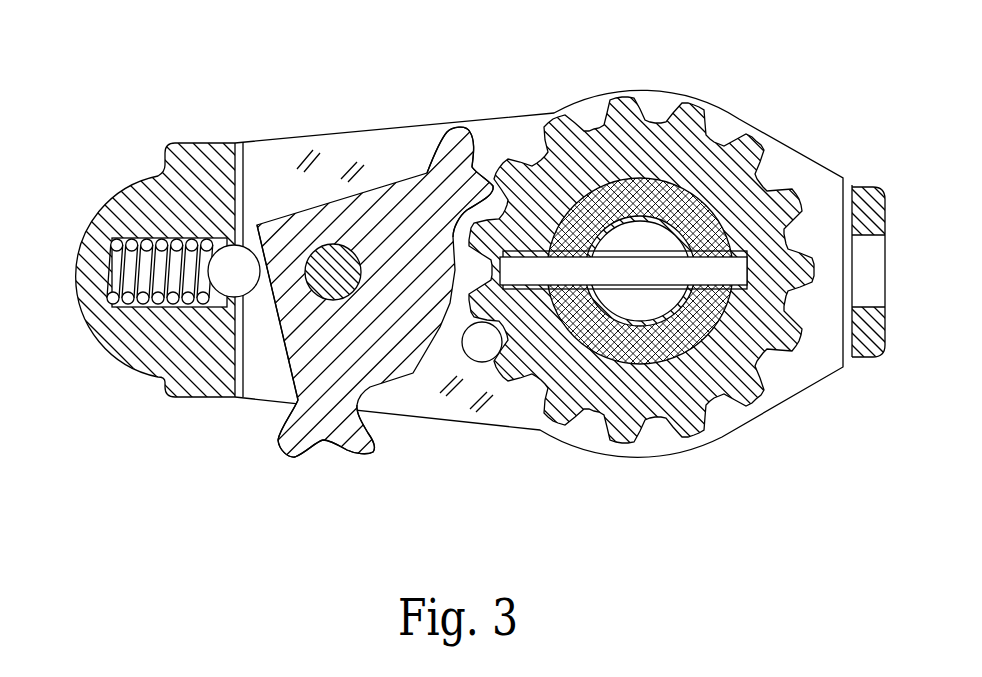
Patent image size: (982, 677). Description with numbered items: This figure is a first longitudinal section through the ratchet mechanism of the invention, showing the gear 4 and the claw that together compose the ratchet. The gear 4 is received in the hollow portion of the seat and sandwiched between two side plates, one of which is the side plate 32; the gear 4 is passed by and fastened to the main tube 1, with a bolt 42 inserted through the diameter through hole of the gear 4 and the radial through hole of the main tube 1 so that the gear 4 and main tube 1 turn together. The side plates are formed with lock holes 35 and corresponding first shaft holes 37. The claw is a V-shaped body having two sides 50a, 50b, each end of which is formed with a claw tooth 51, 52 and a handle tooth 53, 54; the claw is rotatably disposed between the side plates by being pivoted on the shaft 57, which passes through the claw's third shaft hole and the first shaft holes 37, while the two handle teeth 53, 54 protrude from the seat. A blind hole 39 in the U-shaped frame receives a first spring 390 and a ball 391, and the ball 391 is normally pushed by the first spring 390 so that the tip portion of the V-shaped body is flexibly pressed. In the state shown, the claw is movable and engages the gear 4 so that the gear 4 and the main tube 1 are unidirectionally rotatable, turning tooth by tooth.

The main tube 1 is at (630, 325).
The gear 4 is at (553, 229).
The side plate 32 is at (450, 410).
The lock hole 35 is at (481, 350).
The first shaft hole 37 is at (346, 288).
The blind hole 39 is at (105, 277).
The first spring 390 is at (118, 263).
The ball 391 is at (230, 297).
The bolt 42 is at (615, 253).
The side of the claw 50a is at (373, 187).
The side of the claw 50b is at (265, 322).
The claw tooth 51 is at (494, 180).
The claw tooth 52 is at (365, 453).
The handle tooth 53 is at (460, 125).
The handle tooth 54 is at (292, 457).
The shaft 57 is at (332, 277).